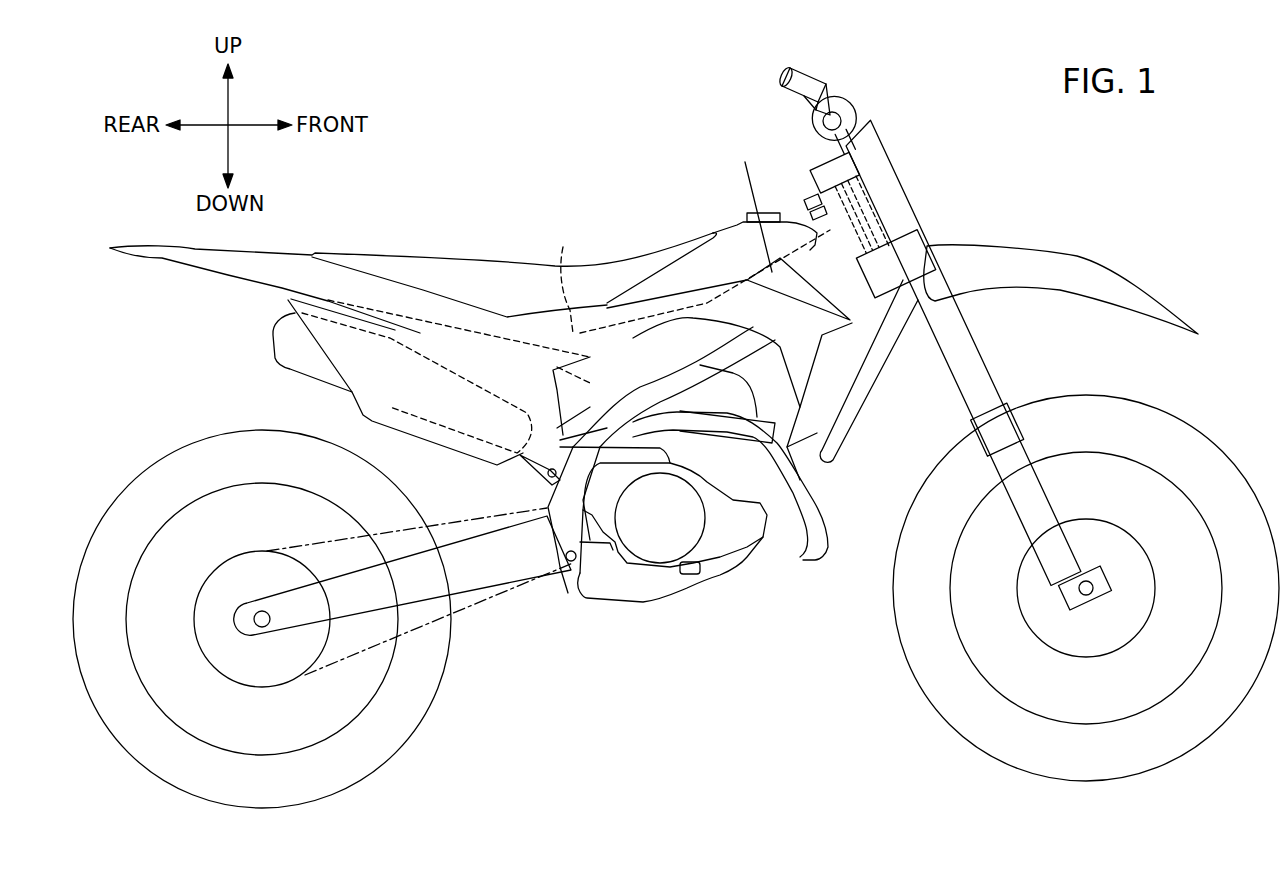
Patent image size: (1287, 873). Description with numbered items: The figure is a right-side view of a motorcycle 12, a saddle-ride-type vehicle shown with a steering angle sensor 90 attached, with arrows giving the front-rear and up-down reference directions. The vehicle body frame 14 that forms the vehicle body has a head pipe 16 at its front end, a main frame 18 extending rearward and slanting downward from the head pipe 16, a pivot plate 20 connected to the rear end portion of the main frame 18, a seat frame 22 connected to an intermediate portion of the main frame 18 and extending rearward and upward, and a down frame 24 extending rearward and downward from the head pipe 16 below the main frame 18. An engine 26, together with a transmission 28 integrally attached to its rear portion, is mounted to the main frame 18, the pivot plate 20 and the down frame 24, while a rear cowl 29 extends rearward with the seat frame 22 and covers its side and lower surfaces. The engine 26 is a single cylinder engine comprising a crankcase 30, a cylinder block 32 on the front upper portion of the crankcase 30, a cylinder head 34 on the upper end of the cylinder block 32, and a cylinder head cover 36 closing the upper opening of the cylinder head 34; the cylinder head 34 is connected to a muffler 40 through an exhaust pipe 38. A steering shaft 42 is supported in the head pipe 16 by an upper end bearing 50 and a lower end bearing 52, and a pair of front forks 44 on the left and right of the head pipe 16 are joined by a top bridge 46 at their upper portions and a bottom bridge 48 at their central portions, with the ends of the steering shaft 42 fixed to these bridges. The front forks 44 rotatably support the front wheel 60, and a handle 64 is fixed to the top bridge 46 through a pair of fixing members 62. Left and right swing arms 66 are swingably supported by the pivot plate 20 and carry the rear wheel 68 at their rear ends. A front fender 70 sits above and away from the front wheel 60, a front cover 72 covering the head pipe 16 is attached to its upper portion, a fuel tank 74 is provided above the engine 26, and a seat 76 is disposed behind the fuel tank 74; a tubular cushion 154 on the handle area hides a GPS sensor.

The motorcycle 12 is at (603, 136).
The vehicle body frame 14 is at (705, 296).
The head pipe 16 is at (892, 197).
The main frame 18 is at (788, 272).
The pivot plate 20 is at (573, 530).
The seat frame 22 is at (568, 278).
The down frame 24 is at (845, 468).
The engine 26 is at (660, 562).
The transmission 28 is at (600, 497).
The rear cowl 29 is at (450, 433).
The crankcase 30 is at (723, 562).
The cylinder block 32 is at (750, 490).
The cylinder head 34 is at (770, 423).
The cylinder head cover 36 is at (737, 390).
The exhaust pipe 38 is at (773, 563).
The muffler 40 is at (287, 347).
The steering shaft 42 is at (912, 216).
The front forks 44 is at (887, 228).
The top bridge 46 is at (880, 140).
The bottom bridge 48 is at (936, 266).
The upper end bearing 50 is at (889, 182).
The lower end bearing 52 is at (947, 305).
The front wheel 60 is at (1208, 460).
The fixing members 62 is at (852, 112).
The handle 64 is at (782, 74).
The swing arms 66 is at (465, 577).
The rear wheel 68 is at (142, 475).
The front fender 70 is at (1085, 272).
The front cover 72 is at (885, 186).
The fuel tank 74 is at (650, 298).
The seat 76 is at (510, 275).
The steering angle sensor 90 is at (800, 194).
The cushion 154 is at (843, 100).